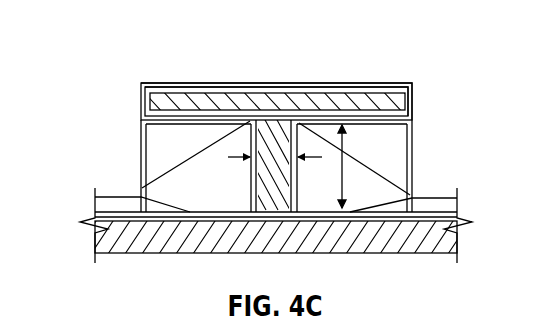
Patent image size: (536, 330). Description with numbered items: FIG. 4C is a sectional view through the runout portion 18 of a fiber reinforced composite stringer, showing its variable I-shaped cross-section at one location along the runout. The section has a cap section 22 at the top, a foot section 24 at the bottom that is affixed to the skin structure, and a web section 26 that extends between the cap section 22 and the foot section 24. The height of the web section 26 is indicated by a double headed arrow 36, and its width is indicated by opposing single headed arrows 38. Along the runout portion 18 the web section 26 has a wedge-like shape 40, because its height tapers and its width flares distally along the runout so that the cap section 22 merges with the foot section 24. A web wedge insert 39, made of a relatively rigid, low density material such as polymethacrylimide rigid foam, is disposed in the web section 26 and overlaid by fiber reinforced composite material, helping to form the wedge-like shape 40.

The runout portion 18 is at (225, 83).
The cap section 22 is at (177, 83).
The foot section 24 is at (102, 204).
The web section 26 is at (168, 185).
The double headed arrow 36 is at (347, 168).
The opposing single headed arrows 38 is at (228, 158).
The web wedge insert 39 is at (266, 135).
The wedge-like shape 40 is at (380, 185).